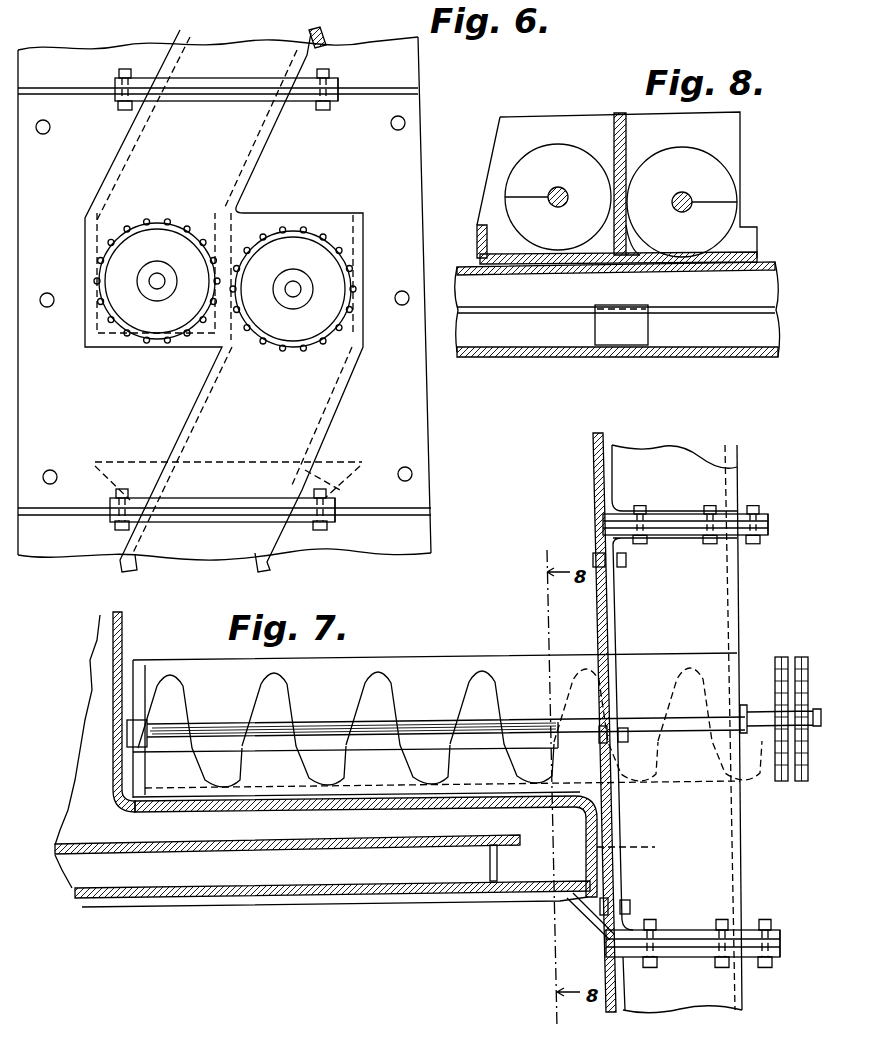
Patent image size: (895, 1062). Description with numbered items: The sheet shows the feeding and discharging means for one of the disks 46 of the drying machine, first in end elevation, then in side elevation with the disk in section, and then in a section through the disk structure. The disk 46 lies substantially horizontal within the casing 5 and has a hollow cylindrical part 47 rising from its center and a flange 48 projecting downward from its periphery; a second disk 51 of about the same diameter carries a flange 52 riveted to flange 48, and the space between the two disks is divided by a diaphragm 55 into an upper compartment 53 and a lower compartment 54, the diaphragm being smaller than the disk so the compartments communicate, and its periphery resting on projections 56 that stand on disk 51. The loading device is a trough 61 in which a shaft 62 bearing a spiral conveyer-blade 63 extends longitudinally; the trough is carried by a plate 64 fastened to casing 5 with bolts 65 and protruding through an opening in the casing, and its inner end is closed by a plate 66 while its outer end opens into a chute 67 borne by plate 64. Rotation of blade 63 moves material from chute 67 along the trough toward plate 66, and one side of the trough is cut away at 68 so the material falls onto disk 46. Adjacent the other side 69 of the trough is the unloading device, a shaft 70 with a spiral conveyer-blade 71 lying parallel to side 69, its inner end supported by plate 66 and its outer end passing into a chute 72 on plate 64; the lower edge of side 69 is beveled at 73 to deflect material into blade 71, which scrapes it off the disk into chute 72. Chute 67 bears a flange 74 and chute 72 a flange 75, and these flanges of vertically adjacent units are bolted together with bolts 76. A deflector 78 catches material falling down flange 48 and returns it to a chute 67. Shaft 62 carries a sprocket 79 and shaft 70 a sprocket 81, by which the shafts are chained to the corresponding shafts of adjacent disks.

In FIG. 7, the casing 5 is at (593, 490).
In FIG. 8, the disk 46 is at (762, 265).
In FIG. 7, the disk 46 is at (253, 808).
In FIG. 7, the hollow cylindrical part 47 is at (117, 700).
In FIG. 7, the flange 48 is at (640, 846).
In FIG. 8, the disk 51 is at (700, 357).
In FIG. 7, the disk 51 is at (352, 893).
In FIG. 7, the flange 52 is at (557, 901).
In FIG. 8, the compartment 53 is at (612, 291).
In FIG. 7, the compartment 53 is at (335, 823).
In FIG. 8, the compartment 54 is at (712, 327).
In FIG. 7, the compartment 54 is at (415, 863).
In FIG. 8, the diaphragm 55 is at (685, 305).
In FIG. 7, the diaphragm 55 is at (234, 853).
In FIG. 8, the projections 56 is at (621, 325).
In FIG. 7, the projections 56 is at (498, 866).
In FIG. 8, the trough 61 is at (530, 263).
In FIG. 7, the trough 61 is at (478, 802).
In FIG. 6, the shaft 62 is at (157, 283).
In FIG. 8, the shaft 62 is at (558, 207).
In FIG. 7, the shaft 62 is at (327, 722).
In FIG. 8, the spiral conveyer-blade 63 is at (558, 197).
In FIG. 7, the spiral conveyer-blade 63 is at (450, 727).
In FIG. 6, the plate or flange 64 is at (224, 298).
In FIG. 7, the plate or flange 64 is at (621, 817).
In FIG. 7, the bolts 65 is at (626, 563).
In FIG. 8, the plate 66 is at (628, 185).
In FIG. 7, the plate 66 is at (145, 672).
In FIG. 6, the chute 67 is at (224, 299).
In FIG. 7, the chute 67 is at (677, 729).
In FIG. 8, the cut-away side 68 is at (481, 228).
In FIG. 7, the cut-away side 68 is at (432, 747).
In FIG. 8, the side of trough 69 is at (628, 138).
In FIG. 7, the side of trough 69 is at (192, 730).
In FIG. 6, the shaft 70 is at (293, 292).
In FIG. 8, the shaft 70 is at (682, 212).
In FIG. 8, the spiral conveyer-blade 71 is at (682, 202).
In FIG. 6, the chute 72 is at (234, 440).
In FIG. 7, the chute 72 is at (690, 727).
In FIG. 8, the beveled edge 73 is at (645, 252).
In FIG. 6, the flange 74 is at (340, 97).
In FIG. 7, the flange 74 is at (773, 534).
In FIG. 6, the flange 75 is at (340, 83).
In FIG. 7, the flange 75 is at (768, 512).
In FIG. 6, the bolts 76 is at (126, 70).
In FIG. 7, the bolts 76 is at (710, 508).
In FIG. 6, the deflector or apron 78 is at (275, 462).
In FIG. 7, the deflector or apron 78 is at (590, 925).
In FIG. 6, the sprocket 79 is at (207, 338).
In FIG. 7, the sprocket 79 is at (802, 657).
In FIG. 6, the sprocket 81 is at (312, 348).